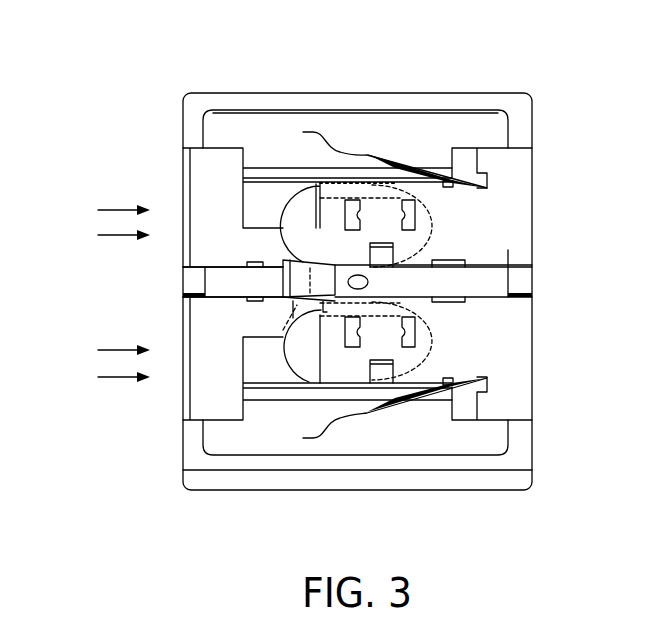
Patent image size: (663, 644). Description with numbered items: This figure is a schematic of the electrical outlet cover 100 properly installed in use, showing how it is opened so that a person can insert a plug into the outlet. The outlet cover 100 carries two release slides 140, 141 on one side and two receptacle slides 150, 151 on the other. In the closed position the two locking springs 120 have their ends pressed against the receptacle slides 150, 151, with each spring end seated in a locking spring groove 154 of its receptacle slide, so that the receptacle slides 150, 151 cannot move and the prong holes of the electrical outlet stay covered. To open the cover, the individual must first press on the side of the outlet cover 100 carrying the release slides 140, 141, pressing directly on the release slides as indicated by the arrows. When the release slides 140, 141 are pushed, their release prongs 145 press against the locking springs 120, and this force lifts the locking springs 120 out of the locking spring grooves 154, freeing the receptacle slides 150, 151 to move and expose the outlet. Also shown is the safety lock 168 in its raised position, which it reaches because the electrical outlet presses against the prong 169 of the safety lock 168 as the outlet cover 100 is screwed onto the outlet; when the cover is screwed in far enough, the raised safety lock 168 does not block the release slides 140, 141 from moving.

The outlet cover 100 is at (146, 89).
The locking spring 120 is at (450, 180).
The release slide 140 is at (197, 195).
The release slide 141 is at (197, 335).
The release prong 145 is at (339, 172).
The receptacle slide 150 is at (510, 197).
The receptacle slide 151 is at (510, 337).
The locking spring groove 154 is at (452, 178).
The safety lock 168 is at (305, 262).
The prong 169 is at (283, 282).